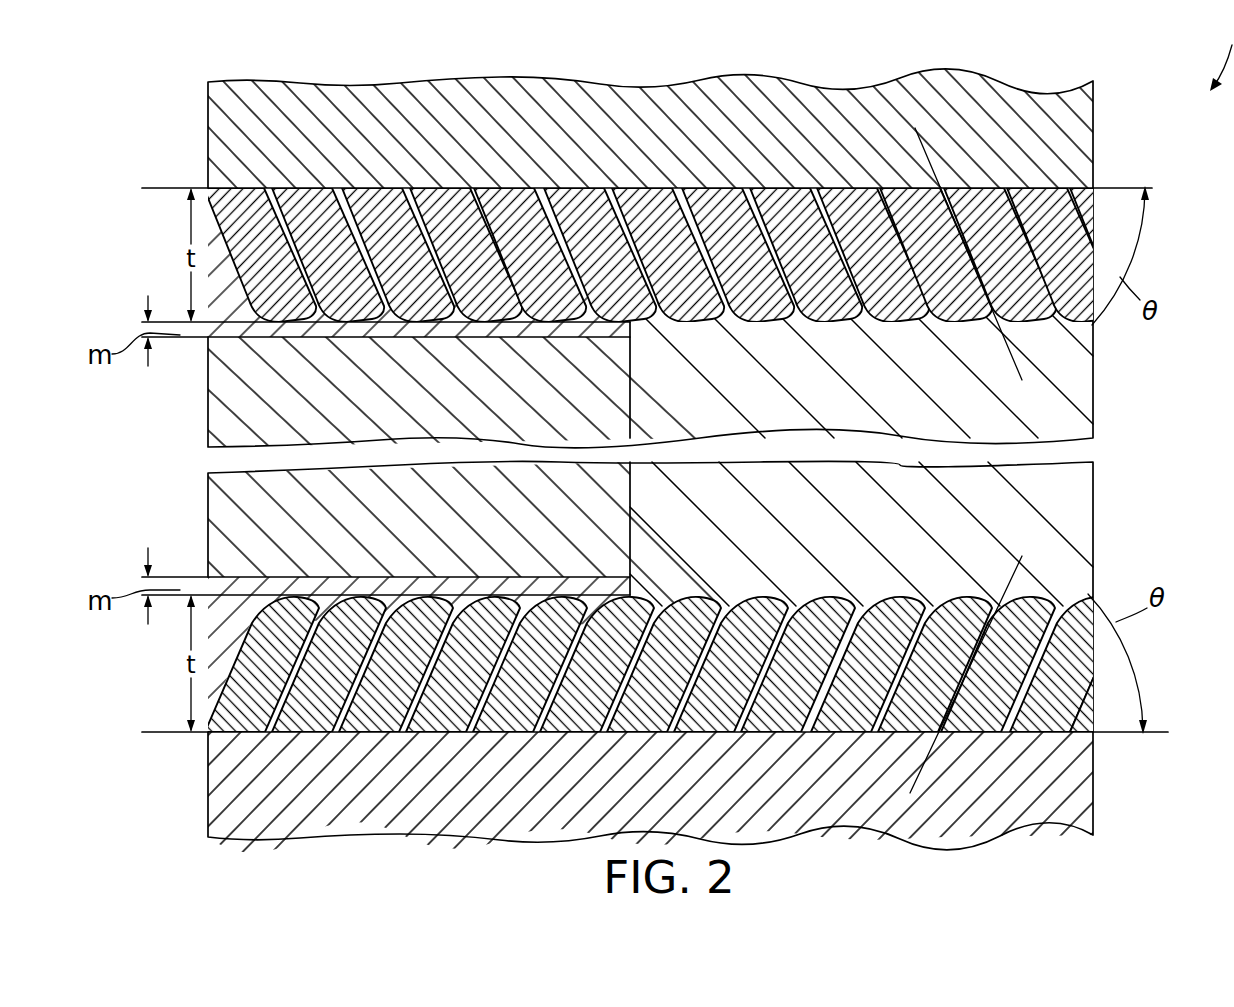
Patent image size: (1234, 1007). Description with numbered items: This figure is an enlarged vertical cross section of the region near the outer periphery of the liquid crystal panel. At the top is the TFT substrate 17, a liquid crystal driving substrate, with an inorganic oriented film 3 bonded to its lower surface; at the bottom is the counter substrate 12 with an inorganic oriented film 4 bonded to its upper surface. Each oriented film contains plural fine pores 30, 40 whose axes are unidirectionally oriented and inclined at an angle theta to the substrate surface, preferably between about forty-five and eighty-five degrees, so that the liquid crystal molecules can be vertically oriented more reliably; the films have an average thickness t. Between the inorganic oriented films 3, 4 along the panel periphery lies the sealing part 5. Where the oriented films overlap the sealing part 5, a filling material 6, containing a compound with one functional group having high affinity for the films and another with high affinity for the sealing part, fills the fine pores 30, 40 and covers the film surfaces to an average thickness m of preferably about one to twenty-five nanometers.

The TFT substrate 17 is at (1118, 185).
The inorganic oriented film 3 is at (1060, 221).
The fine pores 30 is at (985, 300).
The filling material 6 is at (178, 188).
The sealing part 5 is at (178, 337).
The fine pores 40 is at (880, 600).
The inorganic oriented film 4 is at (1057, 675).
The counter substrate 12 is at (1115, 737).